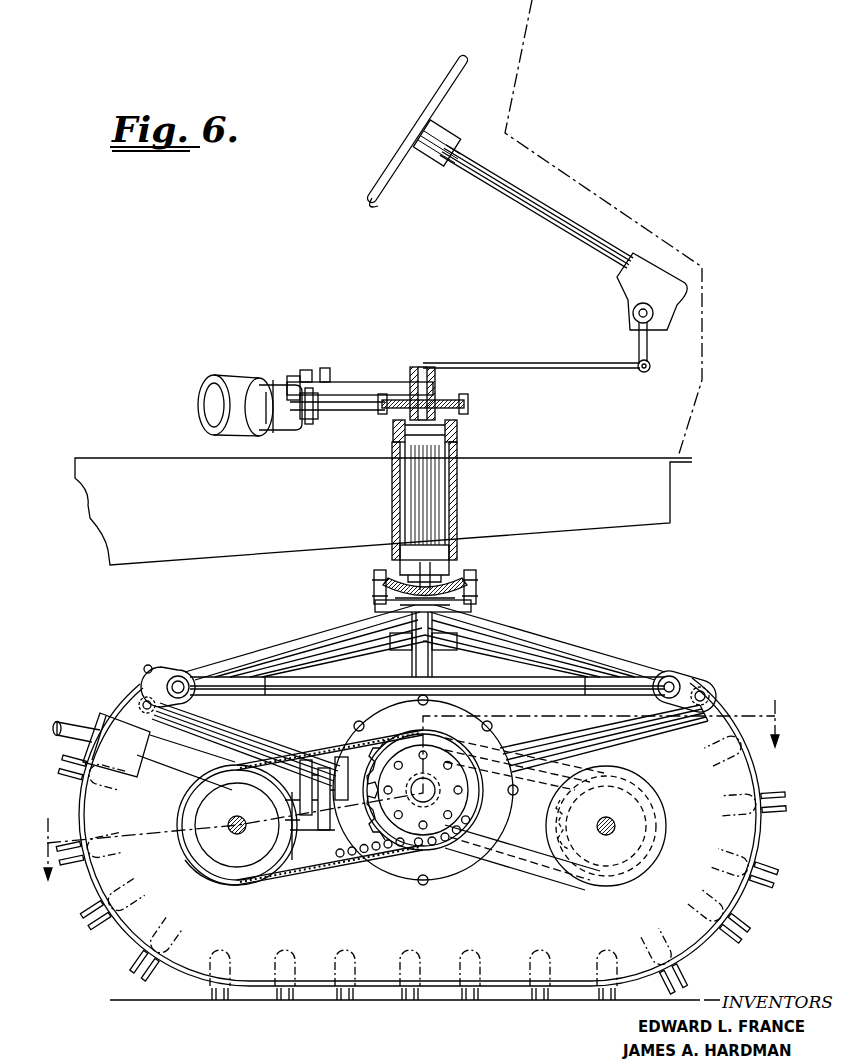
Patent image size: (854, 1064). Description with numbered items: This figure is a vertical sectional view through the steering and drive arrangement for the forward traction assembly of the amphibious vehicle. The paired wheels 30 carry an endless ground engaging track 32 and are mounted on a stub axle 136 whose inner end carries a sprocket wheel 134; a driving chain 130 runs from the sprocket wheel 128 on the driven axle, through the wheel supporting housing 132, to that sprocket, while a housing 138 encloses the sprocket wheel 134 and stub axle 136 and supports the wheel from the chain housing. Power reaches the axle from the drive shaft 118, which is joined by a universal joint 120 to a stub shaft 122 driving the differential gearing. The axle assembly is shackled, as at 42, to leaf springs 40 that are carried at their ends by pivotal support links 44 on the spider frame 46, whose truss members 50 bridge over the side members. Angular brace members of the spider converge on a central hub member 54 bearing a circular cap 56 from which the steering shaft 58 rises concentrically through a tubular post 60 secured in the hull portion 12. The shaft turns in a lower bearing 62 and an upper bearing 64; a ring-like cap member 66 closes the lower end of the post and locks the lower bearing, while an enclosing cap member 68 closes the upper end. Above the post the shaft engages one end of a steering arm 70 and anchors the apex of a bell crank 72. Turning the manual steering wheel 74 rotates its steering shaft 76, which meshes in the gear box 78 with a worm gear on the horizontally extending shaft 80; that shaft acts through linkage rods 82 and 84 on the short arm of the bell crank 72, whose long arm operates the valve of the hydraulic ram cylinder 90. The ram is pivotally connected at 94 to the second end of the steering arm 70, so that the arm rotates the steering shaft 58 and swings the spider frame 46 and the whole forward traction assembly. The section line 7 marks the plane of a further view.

The section line 7- 7 is at (412, 787).
The hull portion 12 is at (655, 487).
The paired wheels 30 is at (92, 900).
The endless ground engaging track 32 is at (132, 940).
The leaf springs 40 is at (640, 732).
The shackle 42 is at (433, 786).
The pivotal support links 44 is at (690, 681).
The spider frame 46 is at (598, 632).
The truss members 50 is at (540, 634).
The central hub member 54 is at (462, 605).
The circular cap 56 is at (477, 579).
The steering shaft 58 is at (447, 566).
The tubular post 60 is at (457, 503).
The lower bearing 62 is at (405, 548).
The upper bearing 64 is at (405, 436).
The ring-like cap member 66 is at (385, 580).
The enclosing cap member 68 is at (463, 412).
The steering arm 70 is at (354, 411).
The bell crank 72 is at (345, 381).
The manual steering wheel 74 is at (372, 201).
The steering shaft 76 is at (548, 230).
The gear box 78 is at (668, 298).
The horizontally extending shaft 80 is at (633, 313).
The linkage rod 82 is at (650, 352).
The linkage rod 84 is at (592, 369).
The hydraulic ram cylinder 90 is at (242, 388).
The pivotal connection 94 is at (314, 413).
The drive shaft 118 is at (160, 762).
The universal joint 120 is at (237, 825).
The stub shaft 122 is at (323, 818).
The sprocket wheel 128 is at (430, 855).
The driving chain 130 is at (386, 862).
The wheel supporting housing 132 is at (352, 878).
The sprocket wheel 134 is at (262, 876).
The stub axle 136 is at (236, 834).
The housing 138 is at (292, 862).